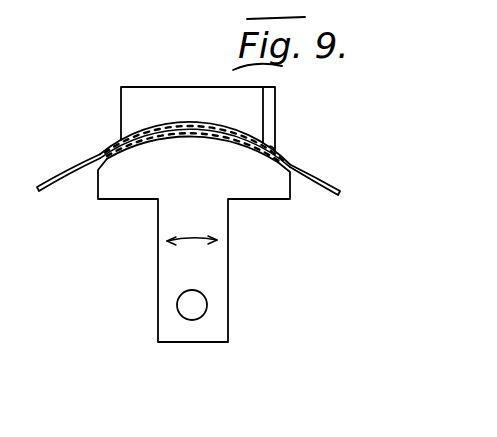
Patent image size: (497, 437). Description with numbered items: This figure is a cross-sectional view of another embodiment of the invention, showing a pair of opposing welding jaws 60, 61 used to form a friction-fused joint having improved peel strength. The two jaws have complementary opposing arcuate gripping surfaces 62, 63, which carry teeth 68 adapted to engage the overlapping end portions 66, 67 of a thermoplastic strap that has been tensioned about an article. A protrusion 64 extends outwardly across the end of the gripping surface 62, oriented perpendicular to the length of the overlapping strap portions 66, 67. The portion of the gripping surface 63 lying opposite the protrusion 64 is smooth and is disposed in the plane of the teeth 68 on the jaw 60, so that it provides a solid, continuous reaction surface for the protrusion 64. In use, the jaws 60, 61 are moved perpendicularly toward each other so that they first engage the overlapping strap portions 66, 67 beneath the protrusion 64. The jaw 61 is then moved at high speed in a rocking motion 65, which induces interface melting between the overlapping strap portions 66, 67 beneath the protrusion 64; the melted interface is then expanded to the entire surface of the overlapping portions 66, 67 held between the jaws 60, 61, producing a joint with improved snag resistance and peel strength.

The welding jaw 60 is at (135, 87).
The welding jaw 61 is at (257, 188).
The arcuate gripping surface 62 is at (209, 123).
The arcuate gripping surface 63 is at (206, 141).
The protrusion 64 is at (272, 113).
The rocking motion 65 is at (197, 236).
The overlapping end portion of thermoplastic strap 66 is at (72, 170).
The overlapping end portion of thermoplastic strap 67 is at (332, 186).
The teeth 68 is at (178, 128).